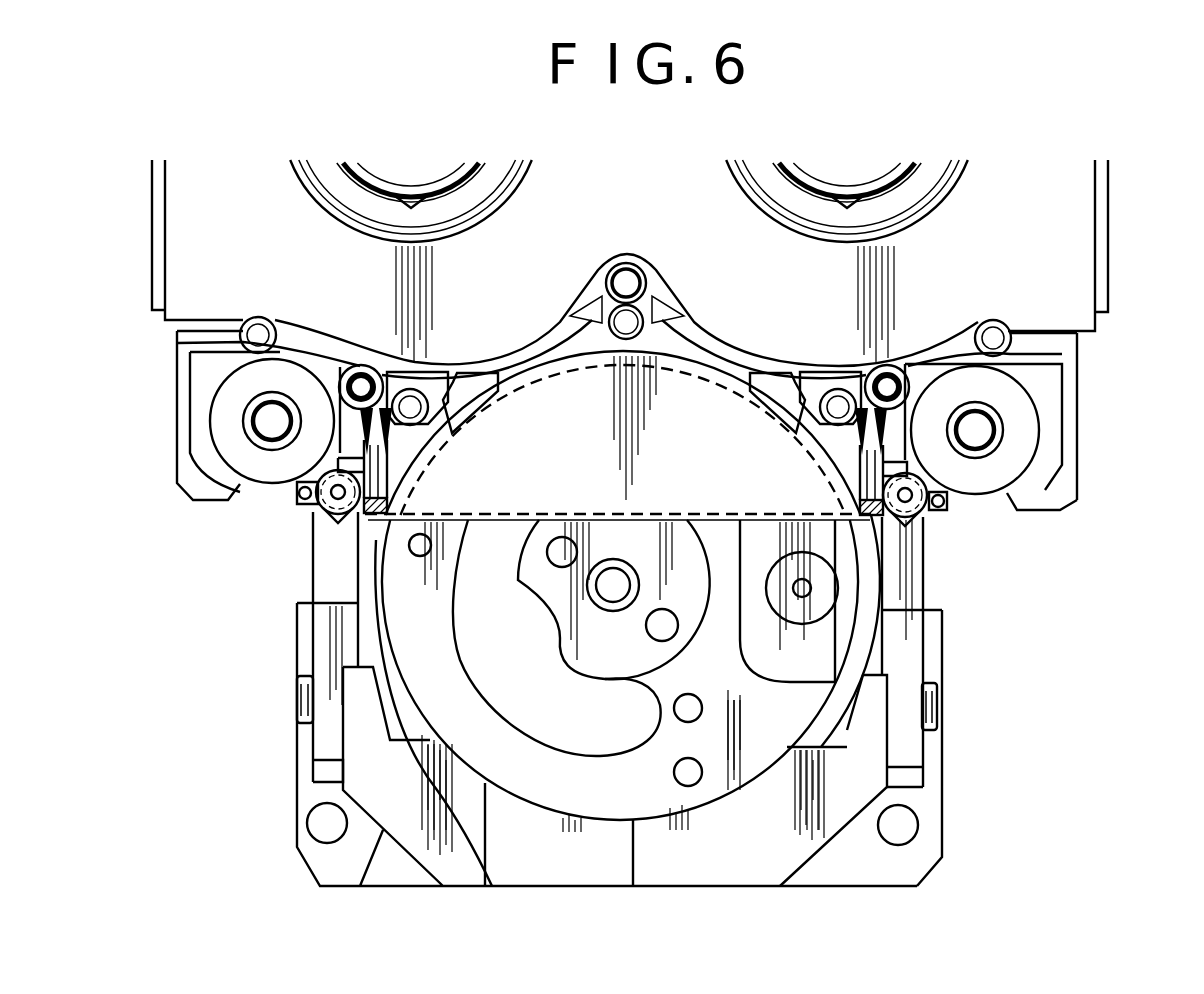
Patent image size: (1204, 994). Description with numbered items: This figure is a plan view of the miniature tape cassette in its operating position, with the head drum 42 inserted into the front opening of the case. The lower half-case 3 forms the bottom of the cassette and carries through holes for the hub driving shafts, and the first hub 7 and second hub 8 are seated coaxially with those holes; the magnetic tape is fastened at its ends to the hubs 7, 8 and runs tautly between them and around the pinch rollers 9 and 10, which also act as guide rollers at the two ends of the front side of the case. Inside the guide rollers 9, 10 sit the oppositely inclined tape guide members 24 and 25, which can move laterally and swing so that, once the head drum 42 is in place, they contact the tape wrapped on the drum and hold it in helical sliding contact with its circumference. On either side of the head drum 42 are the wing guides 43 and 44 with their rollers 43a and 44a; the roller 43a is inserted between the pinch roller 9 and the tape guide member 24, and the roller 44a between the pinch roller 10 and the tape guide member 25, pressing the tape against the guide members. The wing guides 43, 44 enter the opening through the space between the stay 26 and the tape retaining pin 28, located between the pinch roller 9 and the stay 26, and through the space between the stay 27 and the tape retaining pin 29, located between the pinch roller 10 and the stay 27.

The lower half-case 3 is at (1067, 277).
The first hub 7 is at (435, 173).
The second hub 8 is at (878, 176).
The pinch roller 9 is at (218, 428).
The pinch roller 10 is at (1027, 437).
The tape guide member 24 is at (470, 393).
The tape guide member 25 is at (774, 392).
The stay 26 is at (402, 510).
The stay 27 is at (846, 512).
The tape retaining pin 28 is at (297, 498).
The tape retaining pin 29 is at (942, 507).
The head drum 42 is at (533, 375).
The wing guide 43 is at (327, 576).
The roller 43a is at (320, 510).
The wing guide 44 is at (920, 598).
The roller 44a is at (927, 520).